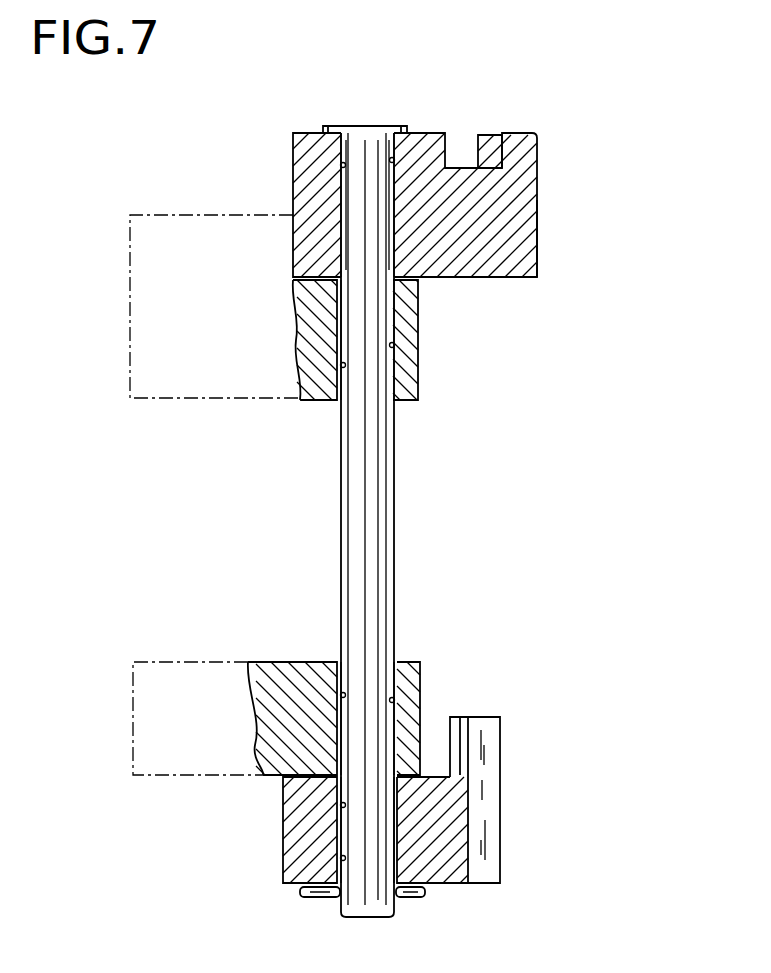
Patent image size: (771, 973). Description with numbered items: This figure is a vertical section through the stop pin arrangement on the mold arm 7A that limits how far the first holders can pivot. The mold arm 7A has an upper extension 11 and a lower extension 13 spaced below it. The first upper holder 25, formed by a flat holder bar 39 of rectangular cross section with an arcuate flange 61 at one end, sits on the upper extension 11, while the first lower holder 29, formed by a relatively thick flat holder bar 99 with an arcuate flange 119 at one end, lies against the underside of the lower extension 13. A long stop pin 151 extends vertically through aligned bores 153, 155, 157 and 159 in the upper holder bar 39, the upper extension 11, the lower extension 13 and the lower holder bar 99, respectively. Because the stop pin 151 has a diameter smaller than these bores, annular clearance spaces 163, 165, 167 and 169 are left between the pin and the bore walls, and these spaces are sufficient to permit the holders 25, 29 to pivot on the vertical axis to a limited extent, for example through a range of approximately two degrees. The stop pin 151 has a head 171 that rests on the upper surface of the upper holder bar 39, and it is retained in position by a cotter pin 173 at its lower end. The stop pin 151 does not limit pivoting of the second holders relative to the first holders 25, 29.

The mold arm 7A is at (130, 300).
The upper extension 11 is at (420, 372).
The lower extension 13 is at (277, 662).
The first upper holder 25 is at (537, 186).
The first lower holder 29 is at (500, 808).
The holder bar 39 is at (537, 255).
The arcuate flange 61 is at (510, 133).
The holder bar 99 is at (445, 883).
The arcuate flange 119 is at (490, 717).
The stop pin 151 is at (395, 480).
The bore 153 is at (393, 160).
The bore 155 is at (393, 348).
The bore 157 is at (400, 700).
The bore 159 is at (338, 858).
The annular clearance space 163 is at (340, 165).
The annular clearance space 165 is at (337, 365).
The annular clearance space 167 is at (337, 690).
The annular clearance space 169 is at (338, 805).
The head 171 is at (363, 125).
The cotter pin 173 is at (322, 897).